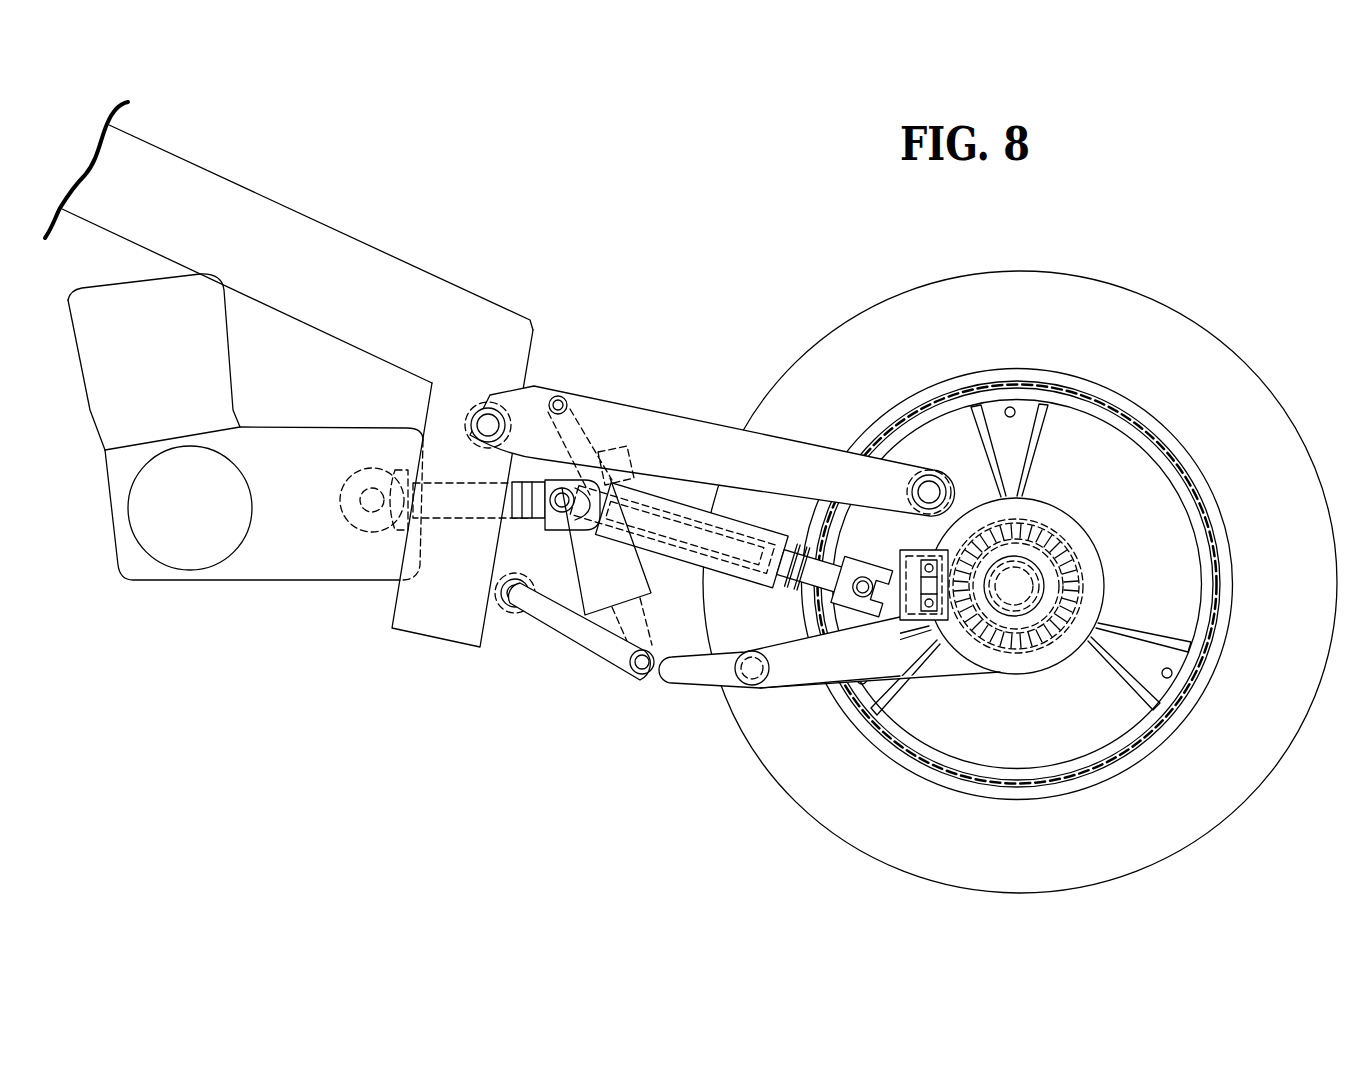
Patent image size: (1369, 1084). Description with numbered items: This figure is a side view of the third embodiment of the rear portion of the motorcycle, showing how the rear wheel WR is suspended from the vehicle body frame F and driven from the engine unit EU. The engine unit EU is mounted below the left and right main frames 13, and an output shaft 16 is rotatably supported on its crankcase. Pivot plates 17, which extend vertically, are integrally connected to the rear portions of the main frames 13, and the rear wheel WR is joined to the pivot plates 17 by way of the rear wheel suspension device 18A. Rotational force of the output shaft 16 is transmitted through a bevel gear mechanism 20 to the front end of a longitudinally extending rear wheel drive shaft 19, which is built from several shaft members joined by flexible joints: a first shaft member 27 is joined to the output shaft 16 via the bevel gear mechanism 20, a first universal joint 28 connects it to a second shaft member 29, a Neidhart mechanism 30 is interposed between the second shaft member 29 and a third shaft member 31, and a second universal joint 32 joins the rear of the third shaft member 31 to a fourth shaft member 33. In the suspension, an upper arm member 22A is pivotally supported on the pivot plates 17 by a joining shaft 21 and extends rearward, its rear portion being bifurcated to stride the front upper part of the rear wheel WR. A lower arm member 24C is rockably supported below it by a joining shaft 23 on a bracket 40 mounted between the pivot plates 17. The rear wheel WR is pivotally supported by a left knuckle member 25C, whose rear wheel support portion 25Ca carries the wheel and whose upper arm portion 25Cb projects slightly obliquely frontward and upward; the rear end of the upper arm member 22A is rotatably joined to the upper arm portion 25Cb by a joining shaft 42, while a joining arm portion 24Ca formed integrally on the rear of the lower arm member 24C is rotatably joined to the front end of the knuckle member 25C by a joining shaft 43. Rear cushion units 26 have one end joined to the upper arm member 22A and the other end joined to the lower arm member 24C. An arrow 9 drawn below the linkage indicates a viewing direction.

The vehicle body frame F is at (289, 242).
The main frames 13 is at (333, 228).
The output shaft 16 is at (365, 485).
The pivot plates 17 is at (423, 627).
The rear wheel suspension device 18A is at (688, 406).
The rear wheel drive shaft 19 is at (735, 590).
The bevel gear mechanism 20 is at (349, 510).
The engine unit EU is at (265, 588).
The joining shaft 21 is at (488, 405).
The upper arm member 22A is at (600, 410).
The joining shaft 23 is at (483, 652).
The lower arm member 24C is at (596, 663).
The joining arm portion 24Ca is at (683, 673).
The knuckle member 25C is at (823, 719).
The rear wheel support portion 25Ca is at (1060, 527).
The upper arm portion 25Cb is at (1007, 462).
The rear cushion units 26 is at (618, 570).
The first shaft member 27 is at (470, 485).
The first universal joint 28 is at (542, 524).
The second shaft member 29 is at (741, 510).
The Neidhart mechanism 30 is at (667, 500).
The third shaft member 31 is at (876, 622).
The second universal joint 32 is at (923, 632).
The fourth shaft member 33 is at (928, 689).
The bracket 40 is at (512, 598).
The joining shaft 42 is at (930, 475).
The joining shafts 43 is at (752, 685).
The rear wheel WR is at (1020, 582).
The viewing direction of FIG. 9 is at (645, 862).